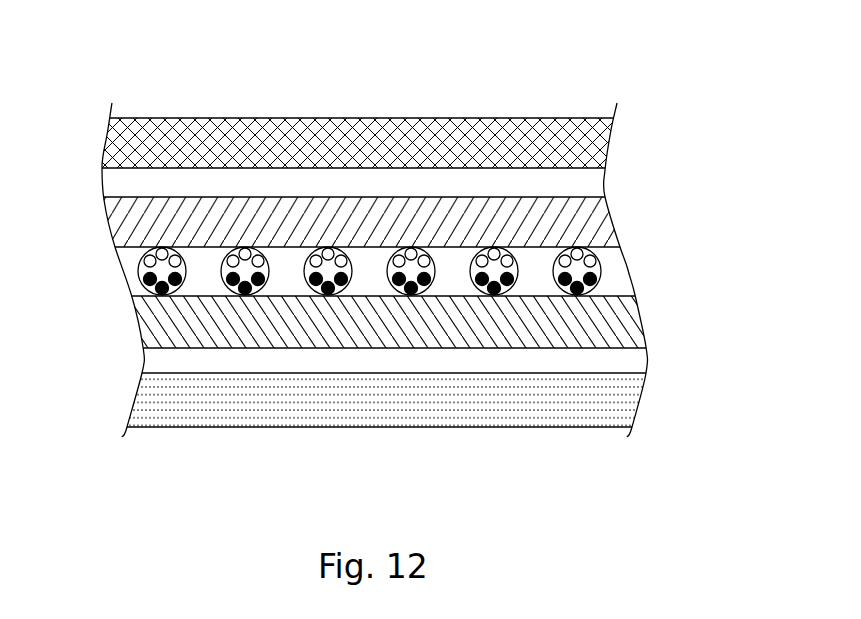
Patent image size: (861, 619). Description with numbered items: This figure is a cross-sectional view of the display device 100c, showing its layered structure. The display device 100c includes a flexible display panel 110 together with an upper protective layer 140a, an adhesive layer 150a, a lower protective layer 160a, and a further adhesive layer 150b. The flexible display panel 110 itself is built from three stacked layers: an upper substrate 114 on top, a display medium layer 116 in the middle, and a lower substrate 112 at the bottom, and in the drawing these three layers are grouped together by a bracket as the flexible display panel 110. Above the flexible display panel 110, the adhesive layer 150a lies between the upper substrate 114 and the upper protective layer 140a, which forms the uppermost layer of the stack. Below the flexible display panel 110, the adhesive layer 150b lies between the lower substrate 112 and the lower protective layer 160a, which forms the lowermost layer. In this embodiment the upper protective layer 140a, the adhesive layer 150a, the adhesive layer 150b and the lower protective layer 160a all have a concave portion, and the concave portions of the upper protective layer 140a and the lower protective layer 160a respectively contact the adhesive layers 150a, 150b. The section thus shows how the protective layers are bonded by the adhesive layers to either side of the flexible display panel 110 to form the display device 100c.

The display device 100c is at (80, 53).
The upper protective layer 140a is at (390, 133).
The adhesive layer 150a is at (477, 183).
The upper substrate 114 is at (603, 223).
The display medium layer 116 is at (617, 272).
The lower substrate 112 is at (397, 322).
The flexible display panel 110 is at (428, 272).
The adhesive layer 150b is at (478, 358).
The lower protective layer 160a is at (390, 407).